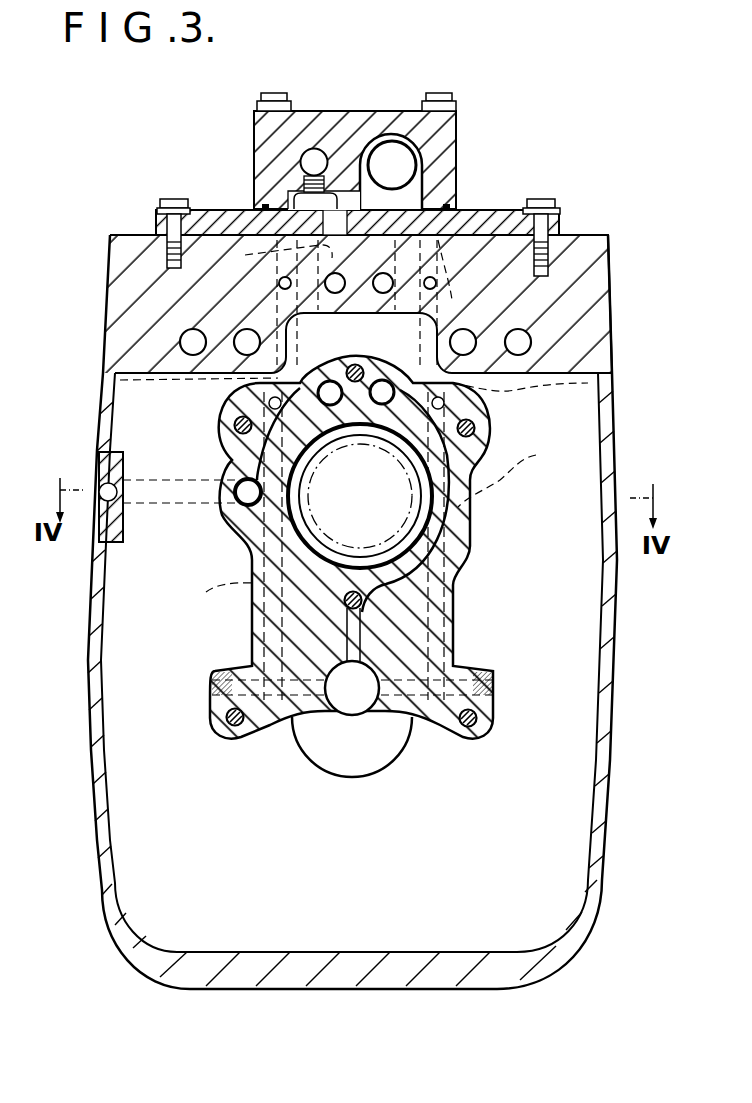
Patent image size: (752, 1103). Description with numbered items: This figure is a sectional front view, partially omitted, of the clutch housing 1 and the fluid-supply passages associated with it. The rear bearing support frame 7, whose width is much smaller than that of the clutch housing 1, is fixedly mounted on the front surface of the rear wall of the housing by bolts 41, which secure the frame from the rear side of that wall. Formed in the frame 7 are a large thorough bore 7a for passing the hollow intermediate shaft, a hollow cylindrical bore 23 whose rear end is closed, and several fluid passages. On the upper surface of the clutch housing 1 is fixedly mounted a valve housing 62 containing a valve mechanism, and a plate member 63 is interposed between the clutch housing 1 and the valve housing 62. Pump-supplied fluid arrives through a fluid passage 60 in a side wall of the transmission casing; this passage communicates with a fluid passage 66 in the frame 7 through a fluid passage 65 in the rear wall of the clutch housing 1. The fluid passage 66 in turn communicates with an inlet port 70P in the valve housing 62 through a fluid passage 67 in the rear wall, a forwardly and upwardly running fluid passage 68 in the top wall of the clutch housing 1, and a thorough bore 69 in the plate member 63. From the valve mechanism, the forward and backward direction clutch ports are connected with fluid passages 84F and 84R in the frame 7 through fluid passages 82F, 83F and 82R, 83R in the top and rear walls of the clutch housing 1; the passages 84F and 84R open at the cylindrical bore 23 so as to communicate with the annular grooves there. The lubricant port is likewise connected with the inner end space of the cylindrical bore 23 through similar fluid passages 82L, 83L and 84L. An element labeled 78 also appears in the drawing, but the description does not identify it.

The clutch housing 1 is at (88, 700).
The rear bearing support frame 7 is at (455, 617).
The thorough bore 7a is at (280, 508).
The hollow cylindrical bore 23 is at (343, 704).
The bolts 41 is at (237, 421).
The fluid passage 60 is at (101, 488).
The valve housing 62 is at (445, 134).
The plate member 63 is at (262, 220).
The fluid passage 65 is at (168, 500).
The fluid passage 66 is at (236, 474).
The fluid passage 67 is at (372, 376).
The fluid passage 68 is at (330, 268).
The thorough bore 69 is at (391, 171).
The inlet port 70P is at (283, 192).
The check ball 78 is at (328, 167).
The fluid passage 82F is at (278, 284).
The fluid passage 82L is at (450, 225).
The fluid passage 82R is at (441, 281).
The fluid passage 83F is at (181, 354).
The fluid passage 83L is at (360, 496).
The fluid passage 83R is at (532, 344).
The fluid passage 84F is at (244, 504).
The fluid passage 84L is at (440, 556).
The fluid passage 84R is at (523, 472).